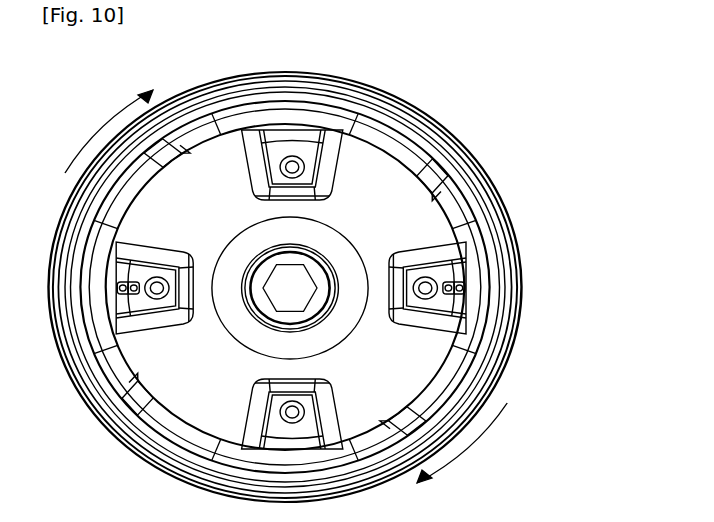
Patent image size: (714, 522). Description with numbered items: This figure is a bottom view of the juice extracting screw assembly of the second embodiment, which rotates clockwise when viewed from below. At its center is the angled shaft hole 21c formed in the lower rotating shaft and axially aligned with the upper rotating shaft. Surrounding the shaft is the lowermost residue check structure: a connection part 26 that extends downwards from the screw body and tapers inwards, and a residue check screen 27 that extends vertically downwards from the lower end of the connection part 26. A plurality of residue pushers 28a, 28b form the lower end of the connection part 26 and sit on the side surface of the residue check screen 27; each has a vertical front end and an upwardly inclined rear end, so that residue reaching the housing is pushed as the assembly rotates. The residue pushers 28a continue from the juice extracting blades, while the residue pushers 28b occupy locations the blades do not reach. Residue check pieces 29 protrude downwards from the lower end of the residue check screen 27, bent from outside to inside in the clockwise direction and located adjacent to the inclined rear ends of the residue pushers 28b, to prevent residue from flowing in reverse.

The angled shaft hole 21c is at (294, 288).
The connection part 26 is at (383, 132).
The residue check screen 27 is at (431, 155).
The residue pusher 28a is at (510, 346).
The residue pusher 28b is at (495, 197).
The residue check piece 29 is at (296, 121).